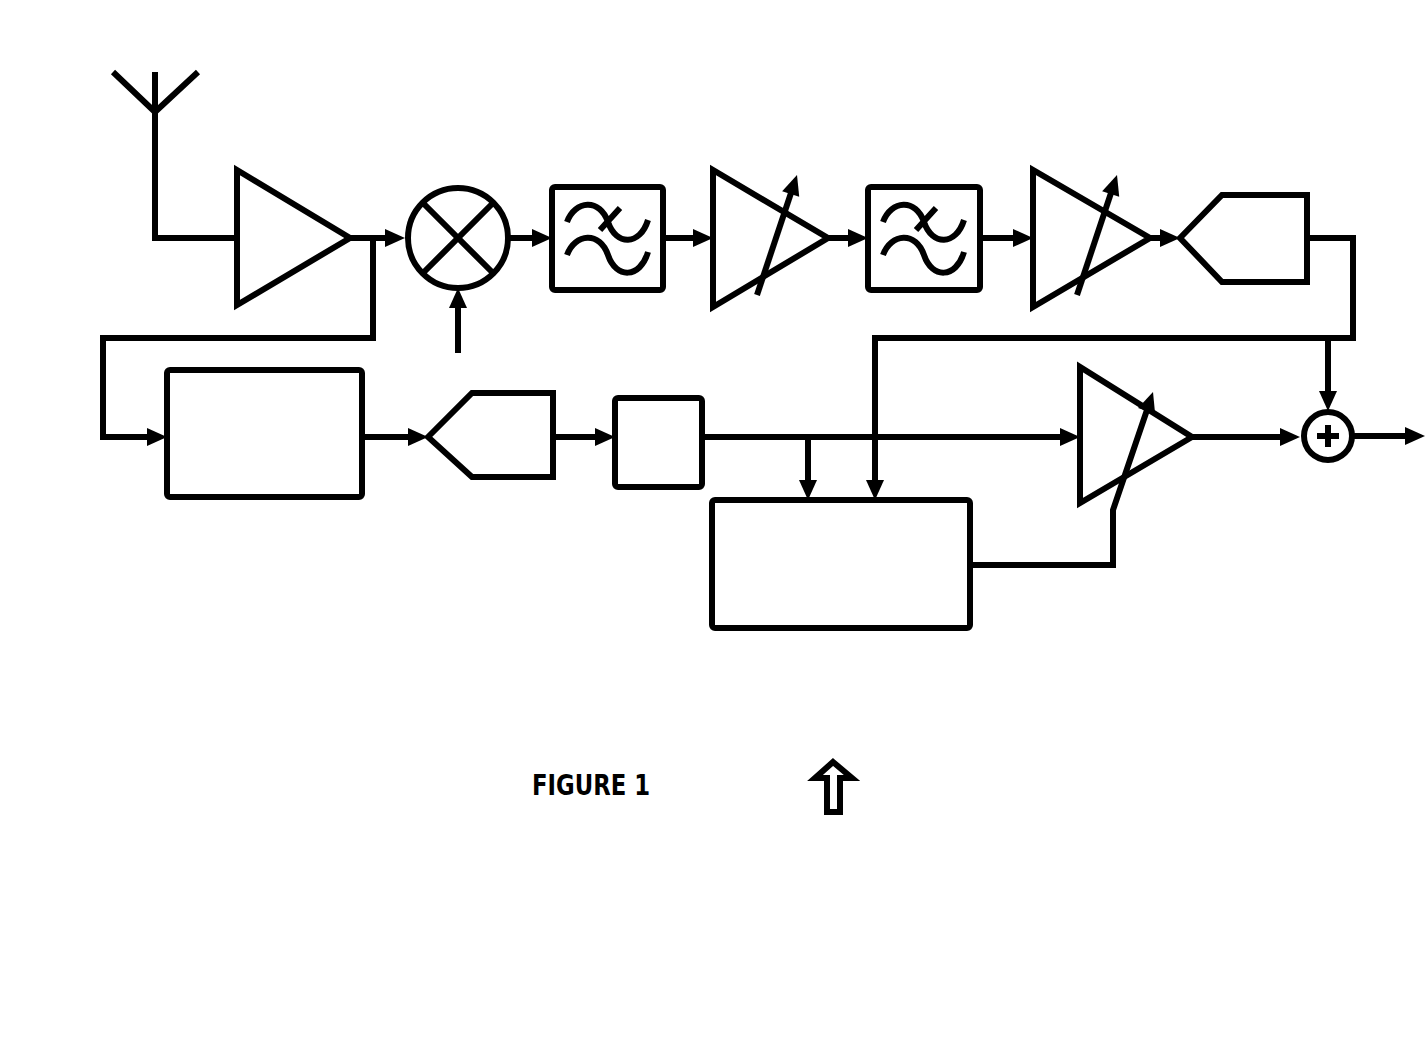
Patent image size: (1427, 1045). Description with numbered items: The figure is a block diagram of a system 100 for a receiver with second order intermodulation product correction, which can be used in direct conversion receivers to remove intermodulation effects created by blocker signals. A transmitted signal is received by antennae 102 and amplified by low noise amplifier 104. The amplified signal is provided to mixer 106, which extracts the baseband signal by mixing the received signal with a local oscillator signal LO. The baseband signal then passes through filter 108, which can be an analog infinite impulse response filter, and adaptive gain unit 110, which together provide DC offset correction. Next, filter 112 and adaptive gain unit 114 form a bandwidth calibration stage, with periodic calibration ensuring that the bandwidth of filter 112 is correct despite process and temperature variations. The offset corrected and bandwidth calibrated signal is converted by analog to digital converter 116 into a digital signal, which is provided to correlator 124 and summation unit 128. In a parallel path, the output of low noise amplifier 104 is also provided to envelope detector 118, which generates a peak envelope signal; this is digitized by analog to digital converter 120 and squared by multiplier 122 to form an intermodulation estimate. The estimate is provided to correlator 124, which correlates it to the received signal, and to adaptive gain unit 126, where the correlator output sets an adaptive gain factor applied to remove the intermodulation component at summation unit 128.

The system 100 is at (811, 787).
The antennae 102 is at (181, 155).
The low noise amplifier 104 is at (254, 300).
The mixer 106 is at (480, 247).
The filter 108 is at (632, 215).
The adaptive gain unit 110 is at (790, 214).
The filter 112 is at (950, 205).
The adaptive gain unit 114 is at (1106, 225).
The analog to digital converter 116 is at (1109, 321).
The envelope detector 118 is at (297, 460).
The analog to digital converter 120 is at (521, 465).
The multiplier 122 is at (847, 468).
The correlator 124 is at (937, 527).
The adaptive gain unit 126 is at (1190, 440).
The summation unit 128 is at (1354, 440).